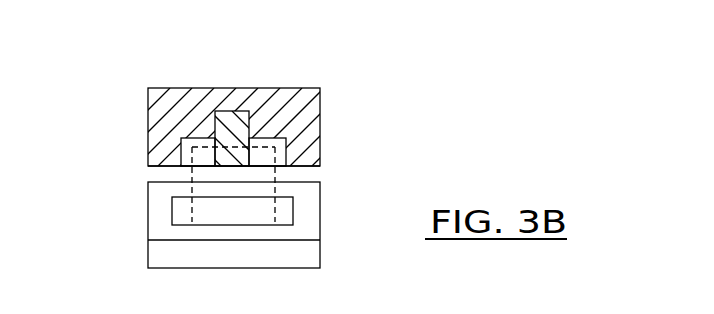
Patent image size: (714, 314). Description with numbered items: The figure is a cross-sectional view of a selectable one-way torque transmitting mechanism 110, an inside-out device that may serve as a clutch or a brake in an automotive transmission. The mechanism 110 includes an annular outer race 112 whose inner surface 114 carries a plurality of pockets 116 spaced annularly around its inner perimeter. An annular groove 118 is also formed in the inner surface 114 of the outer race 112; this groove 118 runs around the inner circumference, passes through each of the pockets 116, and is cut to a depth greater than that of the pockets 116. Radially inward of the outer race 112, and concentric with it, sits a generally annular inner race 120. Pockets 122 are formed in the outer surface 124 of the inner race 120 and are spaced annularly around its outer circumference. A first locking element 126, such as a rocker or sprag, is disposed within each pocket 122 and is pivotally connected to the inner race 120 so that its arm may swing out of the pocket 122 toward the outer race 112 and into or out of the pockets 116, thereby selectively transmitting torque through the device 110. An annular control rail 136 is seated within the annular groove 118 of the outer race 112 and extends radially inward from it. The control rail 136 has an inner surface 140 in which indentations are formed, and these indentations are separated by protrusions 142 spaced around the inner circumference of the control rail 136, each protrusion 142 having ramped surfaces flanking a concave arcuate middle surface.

The selectable one-way torque transmitting mechanism 110 is at (105, 92).
The outer race 112 is at (171, 86).
The inner surface 114 is at (305, 167).
The pockets 116 is at (202, 153).
The annular groove 118 is at (248, 121).
The inner race 120 is at (328, 256).
The pockets 122 is at (288, 210).
The outer surface 124 is at (162, 181).
The first locking element 126 is at (217, 210).
The control rail 136 is at (229, 118).
The inner surface 140 is at (233, 166).
The protrusions 142 is at (224, 150).